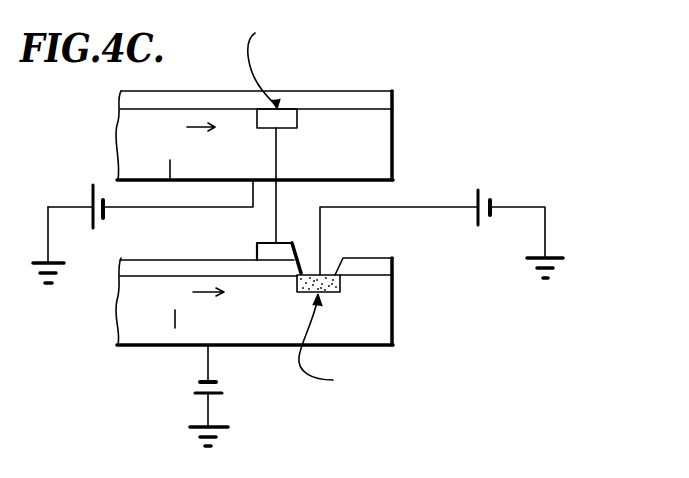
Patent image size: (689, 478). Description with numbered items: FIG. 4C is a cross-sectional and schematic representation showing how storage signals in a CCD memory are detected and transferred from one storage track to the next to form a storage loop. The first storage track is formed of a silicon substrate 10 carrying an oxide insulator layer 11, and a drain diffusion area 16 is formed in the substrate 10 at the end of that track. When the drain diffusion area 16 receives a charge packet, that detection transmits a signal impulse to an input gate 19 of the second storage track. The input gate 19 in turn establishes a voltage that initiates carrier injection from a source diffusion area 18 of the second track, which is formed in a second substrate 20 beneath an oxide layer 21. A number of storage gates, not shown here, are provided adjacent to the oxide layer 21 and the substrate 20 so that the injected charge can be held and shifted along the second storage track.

The silicon substrate 10 is at (390, 148).
The oxide insulator layer 11 is at (393, 100).
The drain diffusion area 16 is at (255, 106).
The source diffusion area 18 is at (340, 285).
The input gate 19 is at (257, 249).
The substrate 20 is at (380, 330).
The oxide layer 21 is at (393, 266).